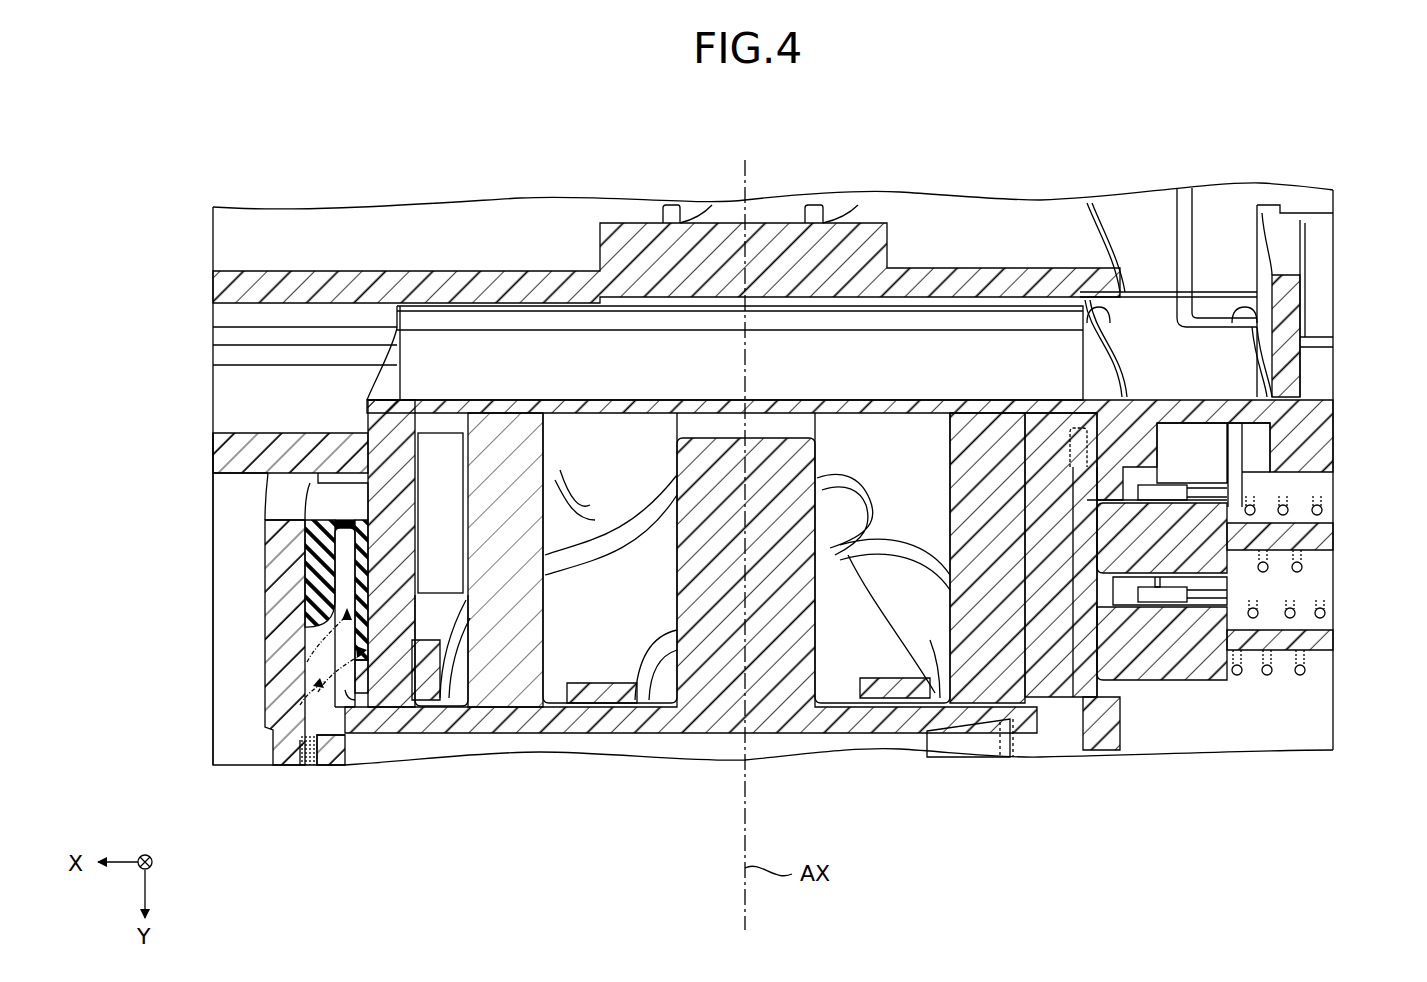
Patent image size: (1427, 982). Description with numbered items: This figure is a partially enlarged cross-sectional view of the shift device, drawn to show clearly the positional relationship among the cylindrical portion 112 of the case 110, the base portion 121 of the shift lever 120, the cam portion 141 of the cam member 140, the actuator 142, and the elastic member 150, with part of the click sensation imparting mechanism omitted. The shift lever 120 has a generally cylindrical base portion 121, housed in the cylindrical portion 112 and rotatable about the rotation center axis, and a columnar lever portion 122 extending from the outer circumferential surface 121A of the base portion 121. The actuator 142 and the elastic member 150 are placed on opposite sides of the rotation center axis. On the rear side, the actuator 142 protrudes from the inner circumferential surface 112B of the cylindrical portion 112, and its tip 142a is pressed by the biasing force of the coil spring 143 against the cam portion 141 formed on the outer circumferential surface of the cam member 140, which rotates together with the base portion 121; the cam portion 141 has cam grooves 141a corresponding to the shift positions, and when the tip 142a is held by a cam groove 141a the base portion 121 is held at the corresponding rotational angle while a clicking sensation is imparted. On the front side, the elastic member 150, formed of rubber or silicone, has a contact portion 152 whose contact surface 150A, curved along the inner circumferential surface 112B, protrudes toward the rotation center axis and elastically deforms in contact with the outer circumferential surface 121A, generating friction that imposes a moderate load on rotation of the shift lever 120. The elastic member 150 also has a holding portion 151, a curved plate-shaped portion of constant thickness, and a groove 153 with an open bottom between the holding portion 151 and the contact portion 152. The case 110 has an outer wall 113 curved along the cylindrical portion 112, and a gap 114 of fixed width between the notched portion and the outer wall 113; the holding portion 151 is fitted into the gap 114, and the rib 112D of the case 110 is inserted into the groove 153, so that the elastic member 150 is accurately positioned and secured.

The case 110 is at (512, 735).
The cylindrical portion 112 is at (330, 697).
The inner circumferential surface 112B is at (385, 692).
The rib 112D is at (343, 548).
The outer wall 113 is at (268, 512).
The gap 114 is at (330, 690).
The shift lever 120 is at (1150, 156).
The base portion 121 is at (396, 690).
The outer circumferential surface 121A is at (323, 493).
The lever portion 122 is at (277, 443).
The cam member 140 is at (1087, 510).
The cam portion 141 is at (1057, 676).
The cam groove 141a is at (1097, 607).
The actuator 142 is at (1170, 653).
The tip 142a is at (1140, 598).
The coil spring 143 is at (1300, 676).
The elastic member 150 is at (213, 605).
The contact surface 150A is at (357, 702).
The holding portion 151 is at (323, 602).
The contact portion 152 is at (355, 652).
The groove 153 is at (345, 632).